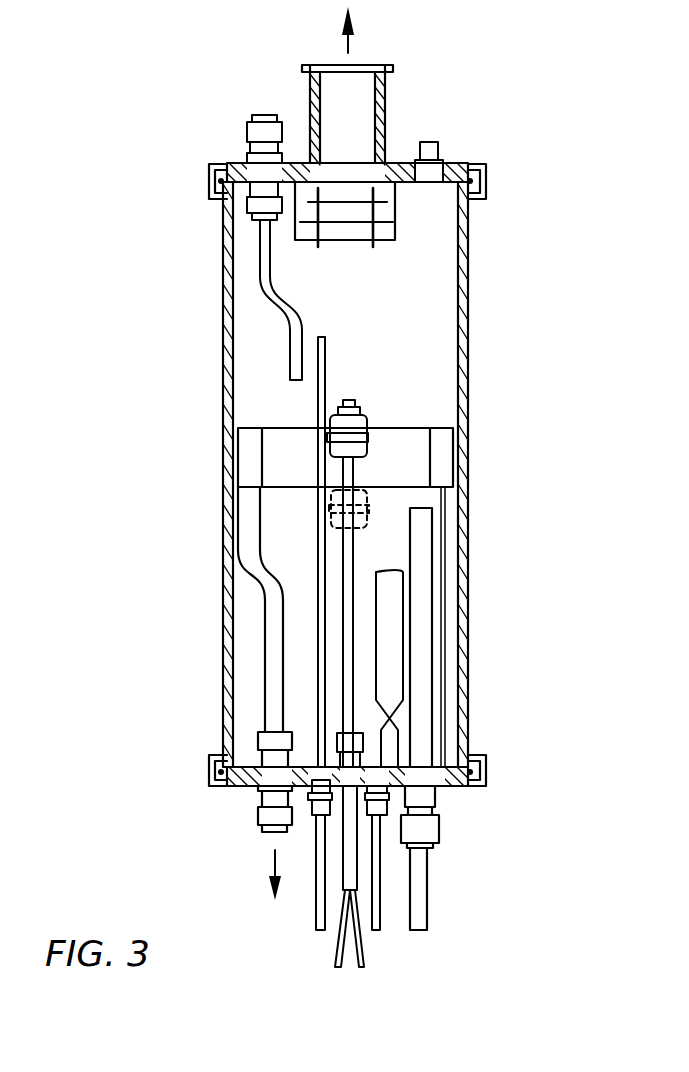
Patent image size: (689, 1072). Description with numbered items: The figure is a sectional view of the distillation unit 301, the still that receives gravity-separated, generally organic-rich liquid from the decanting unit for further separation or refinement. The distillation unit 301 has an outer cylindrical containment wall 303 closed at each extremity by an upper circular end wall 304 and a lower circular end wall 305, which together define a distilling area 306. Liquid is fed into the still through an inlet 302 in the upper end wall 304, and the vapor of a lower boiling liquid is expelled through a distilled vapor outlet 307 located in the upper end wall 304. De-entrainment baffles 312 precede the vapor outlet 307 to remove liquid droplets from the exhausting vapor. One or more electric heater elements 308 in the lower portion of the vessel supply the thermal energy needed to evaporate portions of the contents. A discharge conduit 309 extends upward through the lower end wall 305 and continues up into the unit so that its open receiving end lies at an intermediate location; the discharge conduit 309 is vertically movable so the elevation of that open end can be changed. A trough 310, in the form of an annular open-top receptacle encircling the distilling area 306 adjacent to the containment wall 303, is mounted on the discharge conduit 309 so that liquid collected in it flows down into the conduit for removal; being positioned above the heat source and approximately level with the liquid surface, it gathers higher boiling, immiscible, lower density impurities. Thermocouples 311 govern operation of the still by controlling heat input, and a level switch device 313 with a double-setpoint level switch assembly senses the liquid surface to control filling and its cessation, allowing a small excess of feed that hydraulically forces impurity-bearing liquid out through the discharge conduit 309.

The distillation unit 301 is at (470, 422).
The inlet 302 is at (247, 120).
The outer cylindrical containment wall 303 is at (468, 245).
The upper circular end wall 304 is at (385, 163).
The lower circular end wall 305 is at (440, 787).
The distilling area 306 is at (414, 367).
The distilled vapor outlet 307 is at (385, 92).
The electric heater element 308 is at (432, 570).
The discharge conduit 309 is at (263, 640).
The trough 310 is at (238, 463).
The thermocouple 311 is at (318, 415).
The de-entrainment baffle 312 is at (337, 242).
The level switch device 313 is at (360, 470).